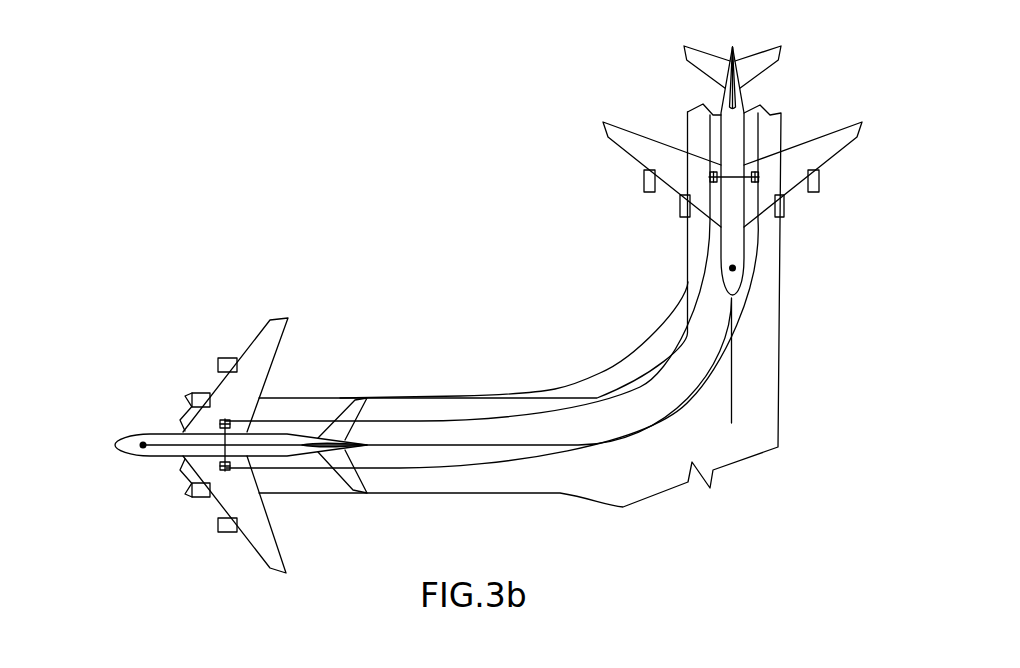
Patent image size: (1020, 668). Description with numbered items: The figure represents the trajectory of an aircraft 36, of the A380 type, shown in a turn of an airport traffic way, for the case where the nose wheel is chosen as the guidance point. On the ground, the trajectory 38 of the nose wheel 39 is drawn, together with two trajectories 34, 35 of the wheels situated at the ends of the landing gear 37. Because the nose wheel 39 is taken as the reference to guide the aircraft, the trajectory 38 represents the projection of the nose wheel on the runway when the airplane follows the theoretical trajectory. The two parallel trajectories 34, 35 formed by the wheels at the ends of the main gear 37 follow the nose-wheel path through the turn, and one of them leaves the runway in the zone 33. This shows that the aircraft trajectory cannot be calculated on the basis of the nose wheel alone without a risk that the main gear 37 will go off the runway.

The zone 33 is at (585, 382).
The trajectory 34 is at (662, 355).
The trajectory 35 is at (545, 459).
The aircraft 36 is at (604, 131).
The landing gear 37 is at (758, 176).
The trajectory 38 is at (455, 446).
The nose wheel 39 is at (736, 268).